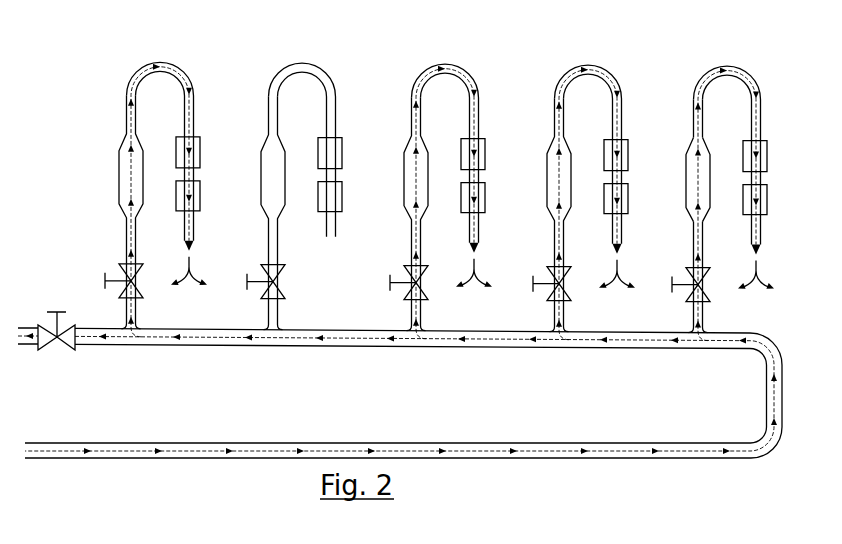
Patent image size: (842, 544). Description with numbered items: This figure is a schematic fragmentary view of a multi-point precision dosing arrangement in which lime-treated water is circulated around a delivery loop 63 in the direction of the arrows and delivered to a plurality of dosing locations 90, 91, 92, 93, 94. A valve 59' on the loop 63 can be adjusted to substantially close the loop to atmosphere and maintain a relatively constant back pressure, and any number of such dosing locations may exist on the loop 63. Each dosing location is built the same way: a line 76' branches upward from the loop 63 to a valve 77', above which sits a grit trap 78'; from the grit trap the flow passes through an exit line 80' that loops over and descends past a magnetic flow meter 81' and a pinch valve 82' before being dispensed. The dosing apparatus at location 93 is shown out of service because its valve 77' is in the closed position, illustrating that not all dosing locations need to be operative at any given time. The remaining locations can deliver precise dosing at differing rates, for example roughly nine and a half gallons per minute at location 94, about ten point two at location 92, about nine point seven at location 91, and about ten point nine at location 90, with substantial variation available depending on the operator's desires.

The delivery loop 63 is at (680, 459).
The valve 59' is at (43, 352).
The dosing location 94 is at (156, 199).
The dosing location 93 is at (304, 196).
The dosing location 92 is at (441, 201).
The dosing location 91 is at (584, 202).
The dosing location 90 is at (740, 189).
The exit line 80′ is at (725, 141).
The magnetic flow meter 81′ is at (784, 152).
The pinch valve 82′ is at (786, 199).
The grit trap 78′ is at (680, 180).
The valve 77' is at (709, 266).
The line 76' is at (718, 317).